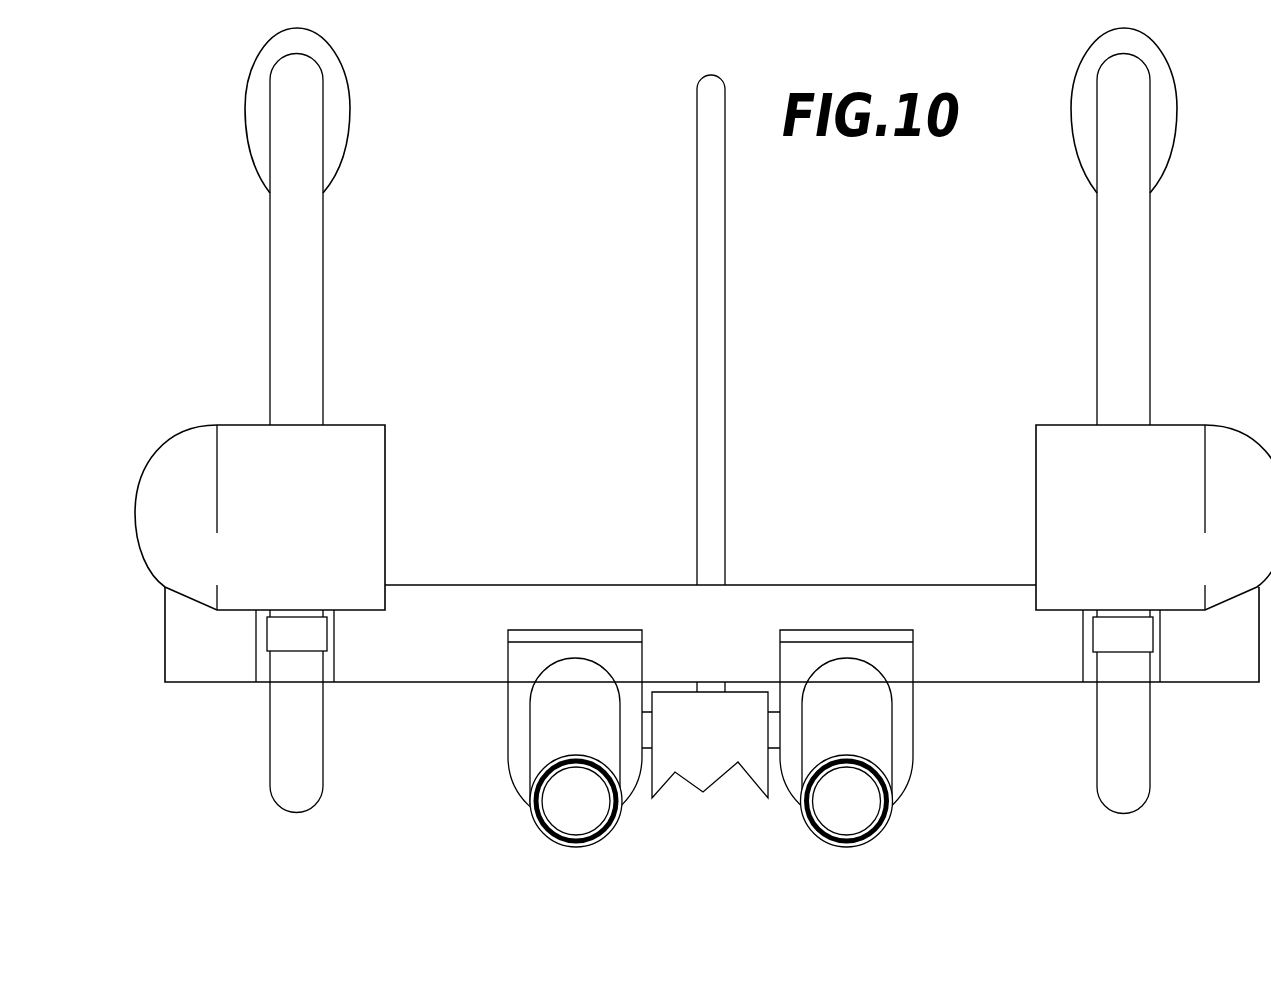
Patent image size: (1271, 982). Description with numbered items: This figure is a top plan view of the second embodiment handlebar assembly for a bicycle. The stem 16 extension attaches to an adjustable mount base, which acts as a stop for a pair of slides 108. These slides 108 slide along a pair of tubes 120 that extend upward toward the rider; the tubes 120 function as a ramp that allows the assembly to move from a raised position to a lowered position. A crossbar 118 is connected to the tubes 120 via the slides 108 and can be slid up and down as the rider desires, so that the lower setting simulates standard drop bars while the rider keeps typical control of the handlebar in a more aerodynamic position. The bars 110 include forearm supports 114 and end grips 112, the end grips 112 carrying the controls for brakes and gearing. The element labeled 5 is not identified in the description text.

The center rod 5 is at (697, 235).
The stem 16 is at (717, 692).
The slides 108 is at (913, 703).
The bars 110 is at (323, 328).
The end grips 112 is at (352, 109).
The forearm supports 114 is at (340, 424).
The crossbar 118 is at (943, 585).
The tubes 120 is at (892, 726).